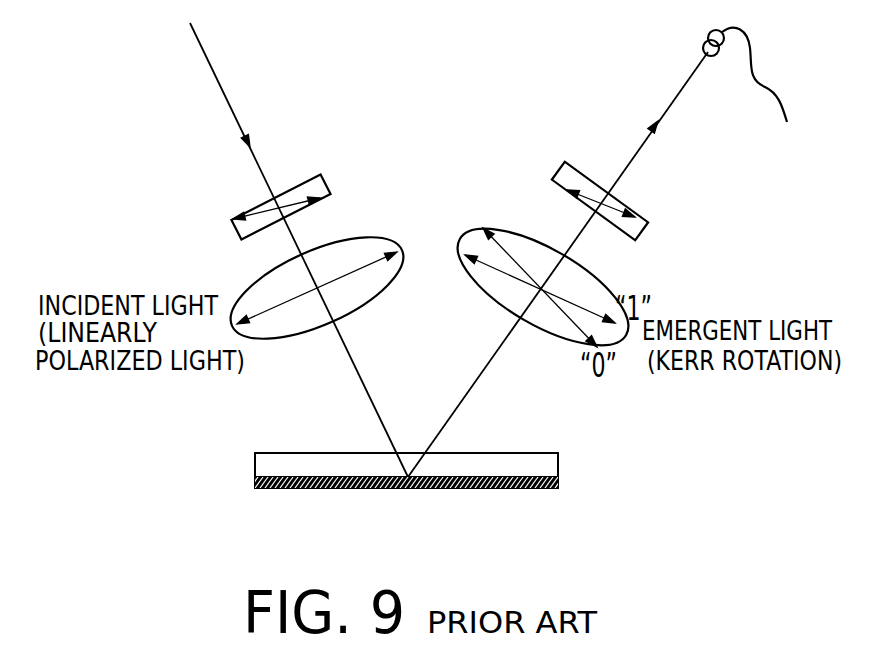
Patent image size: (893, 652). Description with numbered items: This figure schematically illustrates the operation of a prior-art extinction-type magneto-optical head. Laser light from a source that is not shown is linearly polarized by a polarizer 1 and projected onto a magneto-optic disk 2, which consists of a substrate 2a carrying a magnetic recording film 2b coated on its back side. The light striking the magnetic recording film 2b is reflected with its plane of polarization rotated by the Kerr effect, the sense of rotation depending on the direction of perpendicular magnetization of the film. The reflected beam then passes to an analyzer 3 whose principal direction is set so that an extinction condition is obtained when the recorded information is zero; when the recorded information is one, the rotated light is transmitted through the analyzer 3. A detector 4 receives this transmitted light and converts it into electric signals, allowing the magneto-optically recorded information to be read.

The polarizer 1 is at (230, 223).
The magneto-optic disk 2 is at (399, 499).
The substrate 2a is at (265, 465).
The magnetic recording film 2b is at (302, 488).
The analyzer 3 is at (646, 226).
The detector 4 is at (700, 39).